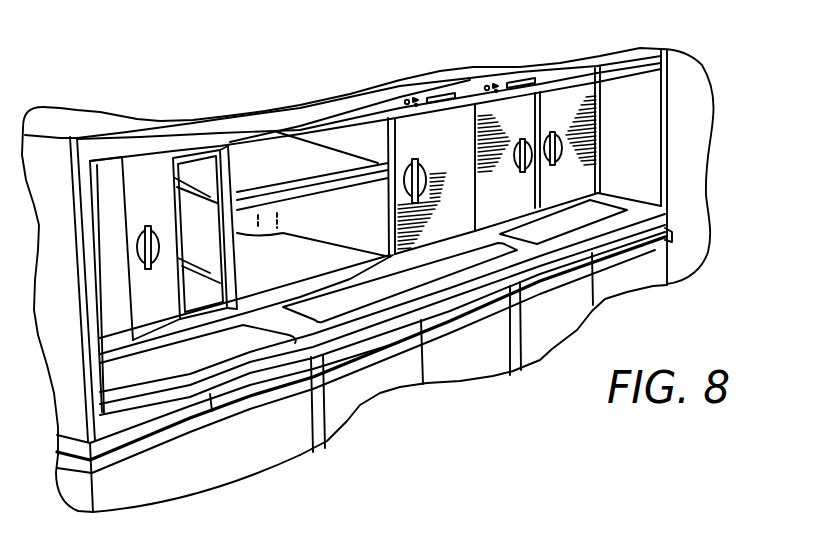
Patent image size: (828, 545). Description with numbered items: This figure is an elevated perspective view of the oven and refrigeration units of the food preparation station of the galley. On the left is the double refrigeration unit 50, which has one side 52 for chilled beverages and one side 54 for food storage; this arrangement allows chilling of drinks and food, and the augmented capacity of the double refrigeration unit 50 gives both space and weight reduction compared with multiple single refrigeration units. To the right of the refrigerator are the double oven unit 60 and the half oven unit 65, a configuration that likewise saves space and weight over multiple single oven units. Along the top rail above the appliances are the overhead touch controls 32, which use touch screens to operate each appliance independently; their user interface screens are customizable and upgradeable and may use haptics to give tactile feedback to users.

The overhead touch controls 32 is at (509, 81).
The double refrigeration unit 50 is at (143, 177).
The chilled beverage side 52 is at (197, 163).
The food storage side 54 is at (100, 188).
The double oven unit 60 is at (557, 117).
The half oven unit 65 is at (417, 140).